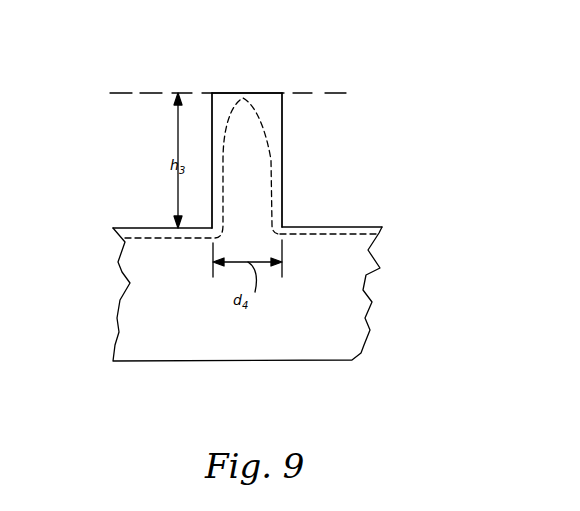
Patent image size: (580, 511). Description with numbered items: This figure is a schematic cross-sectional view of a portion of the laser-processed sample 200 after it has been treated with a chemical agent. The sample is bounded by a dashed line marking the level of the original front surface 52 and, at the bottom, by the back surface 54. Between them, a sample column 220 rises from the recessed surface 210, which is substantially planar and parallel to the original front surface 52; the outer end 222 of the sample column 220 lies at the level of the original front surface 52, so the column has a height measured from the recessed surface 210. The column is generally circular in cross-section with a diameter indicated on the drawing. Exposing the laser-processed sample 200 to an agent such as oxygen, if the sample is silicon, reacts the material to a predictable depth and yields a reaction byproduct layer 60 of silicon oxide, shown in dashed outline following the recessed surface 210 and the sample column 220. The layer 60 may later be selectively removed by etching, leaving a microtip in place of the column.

The front surface 52 is at (142, 92).
The back surface 54 is at (167, 361).
The reaction byproduct layer 60 is at (157, 234).
The laser-processed sample 200 is at (380, 120).
The recessed surface 210 is at (327, 227).
The sample column 220 is at (262, 178).
The outer end 222 is at (223, 93).